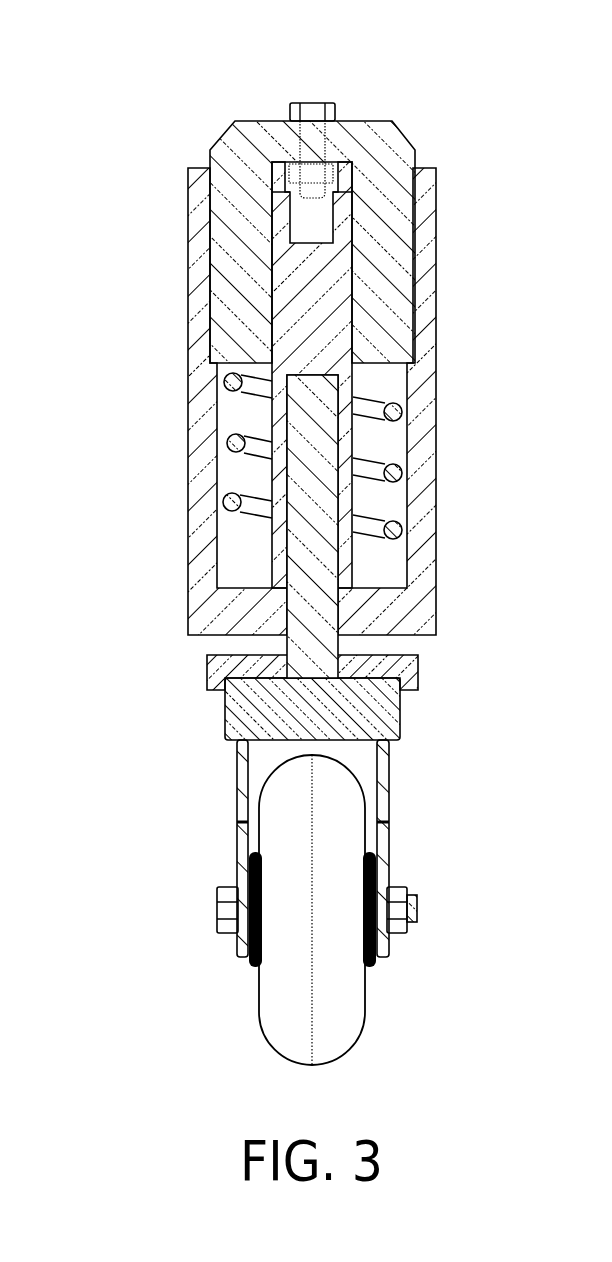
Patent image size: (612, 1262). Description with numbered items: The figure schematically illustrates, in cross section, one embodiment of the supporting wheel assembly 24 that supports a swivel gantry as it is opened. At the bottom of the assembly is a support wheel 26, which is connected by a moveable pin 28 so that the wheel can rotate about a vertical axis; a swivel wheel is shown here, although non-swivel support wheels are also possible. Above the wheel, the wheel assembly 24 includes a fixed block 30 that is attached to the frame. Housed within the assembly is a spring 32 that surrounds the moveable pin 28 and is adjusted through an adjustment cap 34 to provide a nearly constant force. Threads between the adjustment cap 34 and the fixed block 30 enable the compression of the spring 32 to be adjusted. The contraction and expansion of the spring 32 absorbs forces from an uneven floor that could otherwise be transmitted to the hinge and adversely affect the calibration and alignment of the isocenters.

The wheel assembly 24 is at (128, 92).
The support wheel 26 is at (287, 1000).
The moveable pin 28 is at (320, 446).
The fixed block 30 is at (213, 612).
The spring 32 is at (227, 443).
The adjustment cap 34 is at (390, 228).